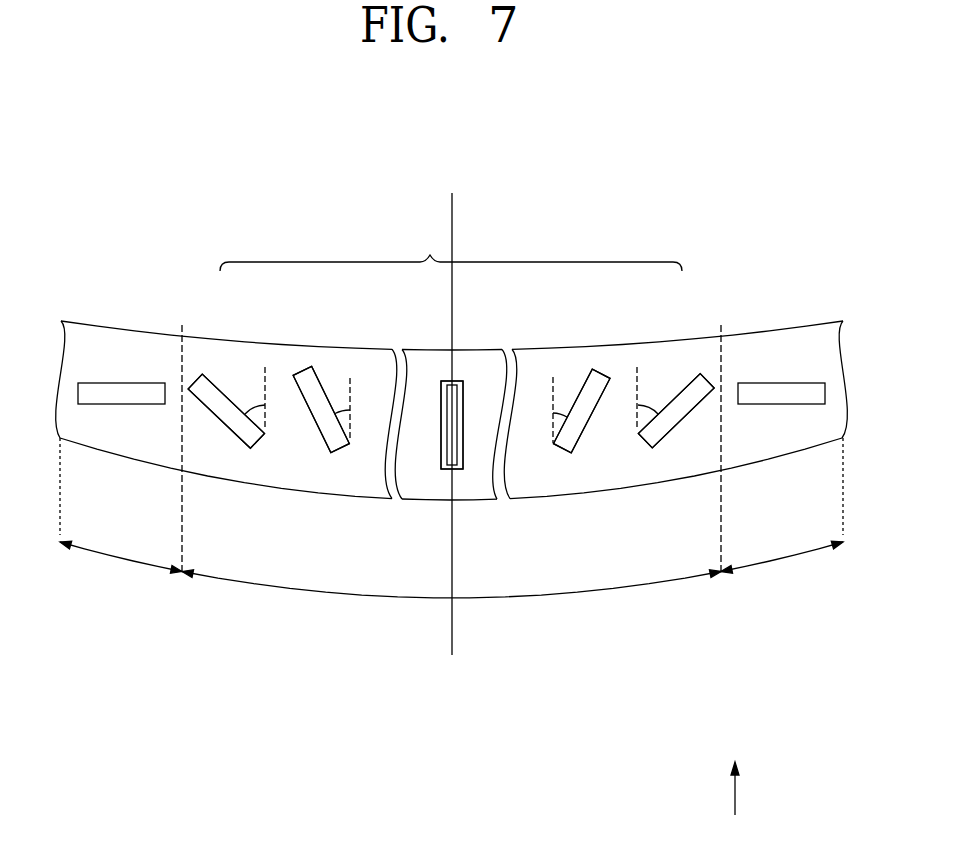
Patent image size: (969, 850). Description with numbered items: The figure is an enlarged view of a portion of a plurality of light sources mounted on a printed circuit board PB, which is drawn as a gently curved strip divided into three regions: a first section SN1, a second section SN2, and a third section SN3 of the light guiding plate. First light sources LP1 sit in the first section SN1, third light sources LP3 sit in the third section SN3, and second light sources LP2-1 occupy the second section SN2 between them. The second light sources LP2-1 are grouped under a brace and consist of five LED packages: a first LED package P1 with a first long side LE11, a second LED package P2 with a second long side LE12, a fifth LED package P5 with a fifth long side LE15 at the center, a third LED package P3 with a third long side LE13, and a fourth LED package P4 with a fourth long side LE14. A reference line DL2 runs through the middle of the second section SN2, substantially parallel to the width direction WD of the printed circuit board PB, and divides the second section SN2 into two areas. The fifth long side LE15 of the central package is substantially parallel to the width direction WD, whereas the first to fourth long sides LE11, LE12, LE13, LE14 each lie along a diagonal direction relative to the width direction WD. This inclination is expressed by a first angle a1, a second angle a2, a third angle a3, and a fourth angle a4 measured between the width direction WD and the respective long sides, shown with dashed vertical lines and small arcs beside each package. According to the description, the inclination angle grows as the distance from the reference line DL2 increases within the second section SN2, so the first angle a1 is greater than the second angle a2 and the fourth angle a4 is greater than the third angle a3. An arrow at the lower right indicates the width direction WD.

The printed circuit board PB is at (833, 362).
The first light sources LP1 is at (122, 390).
The second light sources LP2-1 is at (451, 247).
The third light sources LP3 is at (768, 393).
The first LED package P1 is at (213, 392).
The second LED package P2 is at (323, 392).
The third LED package P3 is at (594, 380).
The fourth LED package P4 is at (692, 395).
The fifth LED package P5 is at (447, 383).
The first long side LE11 is at (213, 417).
The second long side LE12 is at (309, 425).
The third long side LE13 is at (594, 425).
The fourth long side LE14 is at (688, 417).
The fifth long side LE15 is at (441, 442).
The first angle a1 is at (251, 398).
The second angle a2 is at (337, 405).
The third angle a3 is at (566, 409).
The fourth angle a4 is at (655, 398).
The first section SN1 is at (121, 563).
The second section SN2 is at (451, 600).
The third section SN3 is at (782, 563).
The reference line DL2 is at (451, 439).
The width direction WD is at (749, 788).